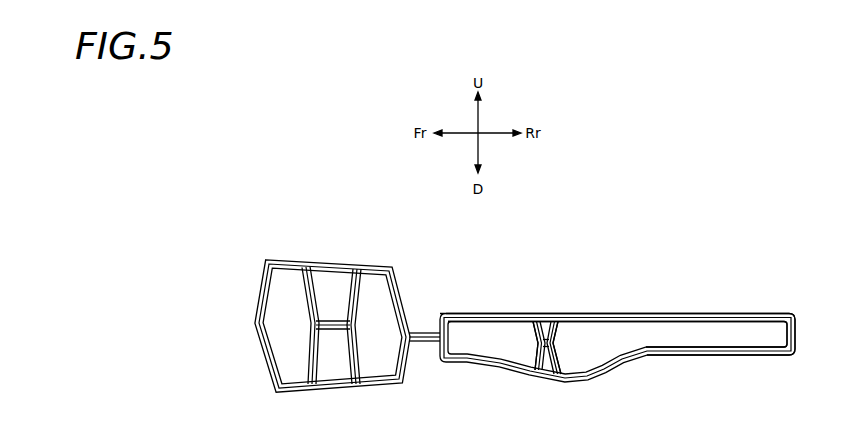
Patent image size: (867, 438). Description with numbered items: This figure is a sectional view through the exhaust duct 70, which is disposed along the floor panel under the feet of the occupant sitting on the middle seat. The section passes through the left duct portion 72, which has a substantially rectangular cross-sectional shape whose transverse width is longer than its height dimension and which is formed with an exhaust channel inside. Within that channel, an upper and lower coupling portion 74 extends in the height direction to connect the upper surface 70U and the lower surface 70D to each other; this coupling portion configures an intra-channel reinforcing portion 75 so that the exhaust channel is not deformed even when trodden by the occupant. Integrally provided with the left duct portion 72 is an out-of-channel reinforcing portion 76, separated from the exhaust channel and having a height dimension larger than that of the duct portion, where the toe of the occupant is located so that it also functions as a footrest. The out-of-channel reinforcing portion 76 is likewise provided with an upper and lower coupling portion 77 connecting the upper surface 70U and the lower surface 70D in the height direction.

The exhaust duct 70 is at (707, 251).
The upper surface 70U is at (662, 312).
The lower surface 70D is at (704, 357).
The left duct portion 72 is at (754, 312).
The upper and lower coupling portion 74 is at (548, 331).
The intra-channel reinforcing portion 75 is at (547, 348).
The out-of-channel reinforcing portion 76 is at (283, 260).
The upper and lower coupling portion 77 is at (332, 320).